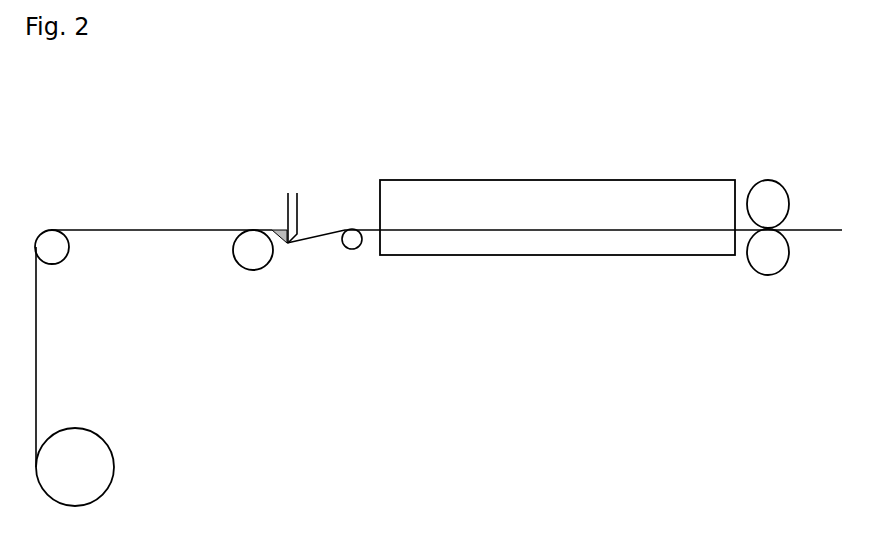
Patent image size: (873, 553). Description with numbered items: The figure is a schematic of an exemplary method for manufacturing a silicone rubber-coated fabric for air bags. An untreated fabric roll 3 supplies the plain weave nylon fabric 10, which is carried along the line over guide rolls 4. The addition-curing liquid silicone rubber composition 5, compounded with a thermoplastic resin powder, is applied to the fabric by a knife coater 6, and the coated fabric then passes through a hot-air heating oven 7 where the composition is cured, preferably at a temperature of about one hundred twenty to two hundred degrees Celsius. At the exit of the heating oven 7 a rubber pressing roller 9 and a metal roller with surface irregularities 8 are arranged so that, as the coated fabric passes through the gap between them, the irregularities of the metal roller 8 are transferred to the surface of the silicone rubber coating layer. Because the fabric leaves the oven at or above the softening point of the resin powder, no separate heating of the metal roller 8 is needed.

The untreated fabric roll 3 is at (112, 448).
The guide rolls 4 is at (348, 253).
The addition-curing liquid silicone rubber composition 5 is at (273, 232).
The knife coater 6 is at (293, 205).
The heating oven 7 is at (493, 261).
The metal roller with surface irregularities 8 is at (770, 180).
The rubber pressing roller 9 is at (770, 274).
The plain weave fabric of Nylon 66 10 is at (37, 372).